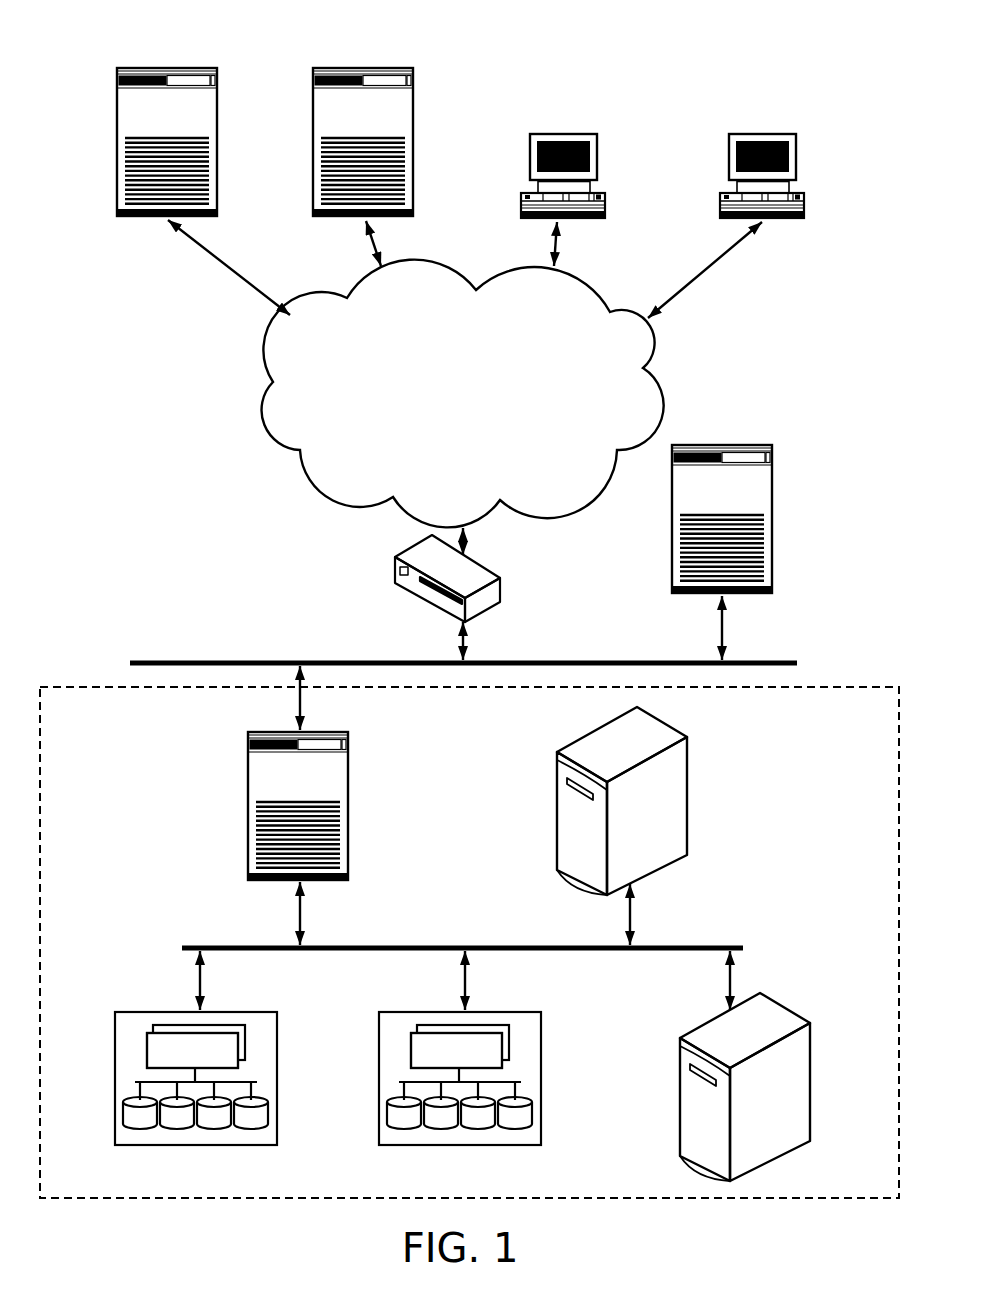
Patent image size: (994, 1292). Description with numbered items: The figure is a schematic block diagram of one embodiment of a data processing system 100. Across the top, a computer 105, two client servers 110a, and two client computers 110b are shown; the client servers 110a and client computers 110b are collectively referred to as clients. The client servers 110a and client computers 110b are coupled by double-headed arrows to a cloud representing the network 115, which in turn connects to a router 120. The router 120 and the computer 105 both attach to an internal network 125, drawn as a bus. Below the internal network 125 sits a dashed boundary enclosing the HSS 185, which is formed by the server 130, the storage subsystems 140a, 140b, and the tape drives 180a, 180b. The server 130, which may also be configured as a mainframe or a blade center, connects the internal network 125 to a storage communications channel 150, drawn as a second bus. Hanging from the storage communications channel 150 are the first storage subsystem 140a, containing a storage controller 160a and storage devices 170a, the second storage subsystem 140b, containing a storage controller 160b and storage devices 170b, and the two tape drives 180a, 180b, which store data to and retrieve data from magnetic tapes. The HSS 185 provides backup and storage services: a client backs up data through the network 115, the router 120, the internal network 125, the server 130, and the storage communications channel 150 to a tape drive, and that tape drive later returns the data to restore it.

The data processing system 100 is at (859, 75).
The computer 105 is at (773, 445).
The client server 110a is at (217, 72).
The client computer 110b is at (597, 134).
The network 115 is at (463, 394).
The router 120 is at (500, 578).
The internal network 125 is at (152, 660).
The server 130 is at (350, 815).
The first storage subsystem 140a is at (277, 1012).
The second storage subsystem 140b is at (542, 1012).
The storage communications channel 150 is at (397, 945).
The storage controller 160a is at (147, 1052).
The storage controller 160b is at (411, 1052).
The storage devices 170a is at (123, 1113).
The storage devices 170b is at (387, 1113).
The first tape drive 180a is at (687, 760).
The second tape drive 180b is at (812, 1050).
The HSS 185 is at (823, 687).